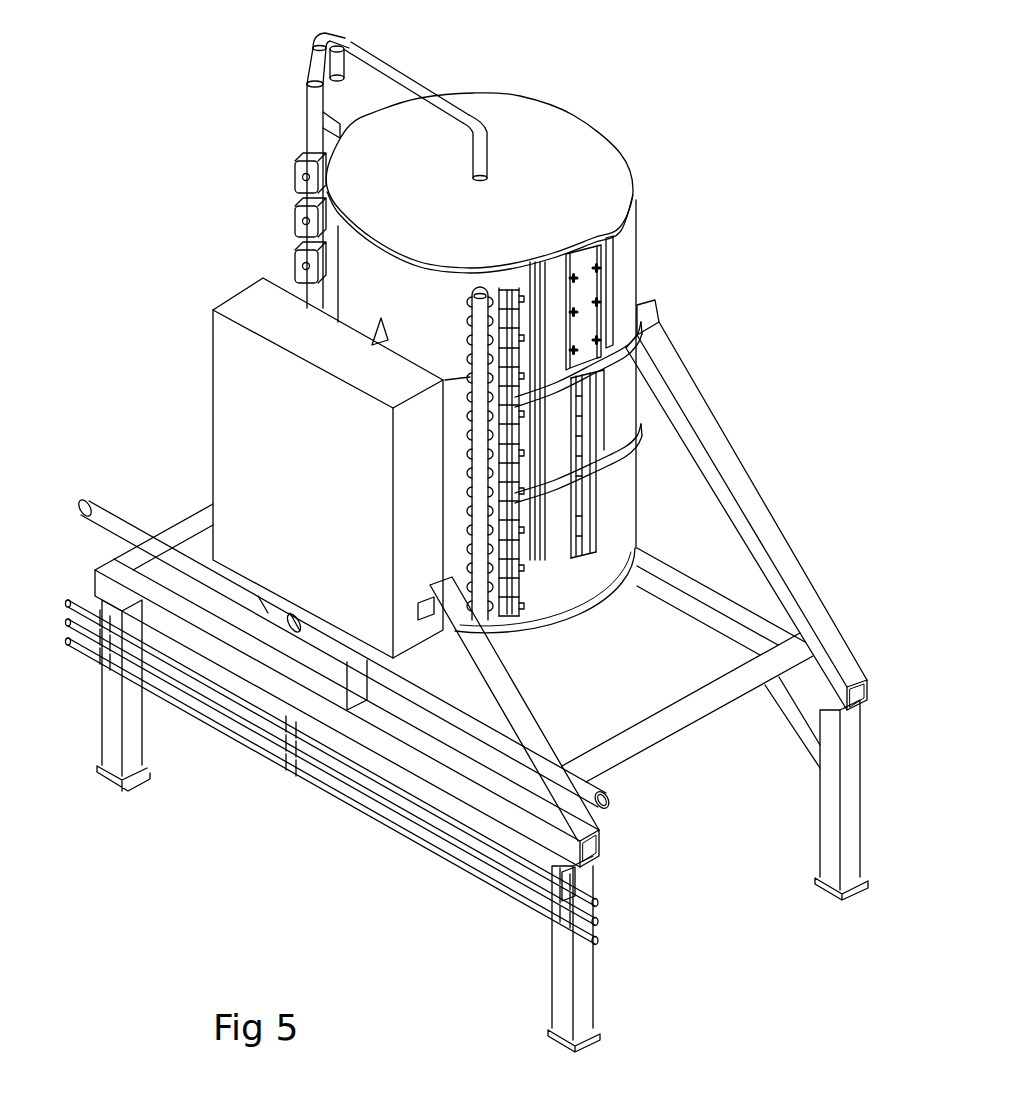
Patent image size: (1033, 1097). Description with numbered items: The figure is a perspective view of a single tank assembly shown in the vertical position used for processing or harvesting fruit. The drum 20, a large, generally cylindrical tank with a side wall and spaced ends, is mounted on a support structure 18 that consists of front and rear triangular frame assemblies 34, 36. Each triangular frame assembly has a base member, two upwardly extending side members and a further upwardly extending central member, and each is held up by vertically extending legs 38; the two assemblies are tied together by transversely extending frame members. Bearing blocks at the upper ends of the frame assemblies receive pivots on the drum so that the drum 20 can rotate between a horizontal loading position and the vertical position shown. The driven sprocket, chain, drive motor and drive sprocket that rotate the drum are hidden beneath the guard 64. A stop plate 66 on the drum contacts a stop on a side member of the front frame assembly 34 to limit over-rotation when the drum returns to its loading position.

The support structure 18 is at (500, 676).
The drum 20 is at (663, 157).
The front triangular frame assembly 34 is at (513, 712).
The rear triangular frame assembly 36 is at (807, 578).
The legs 38 is at (134, 750).
The guard 64 is at (336, 501).
The stop plate 66 is at (385, 325).